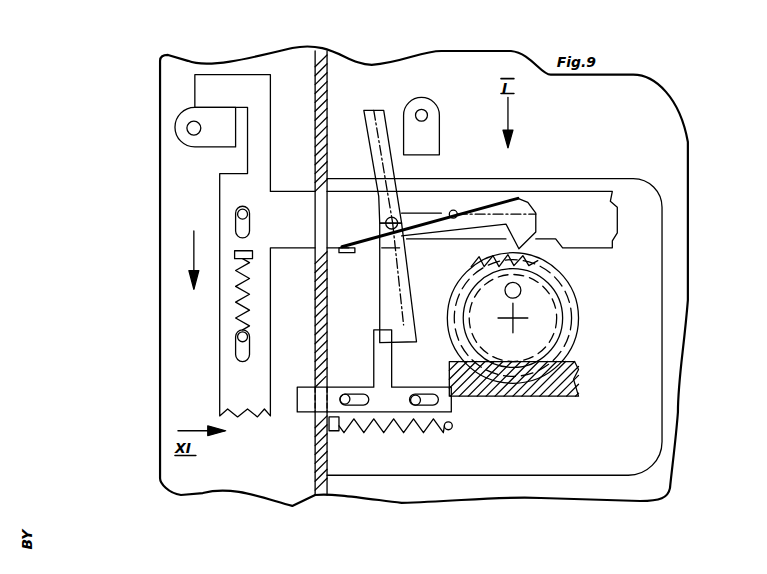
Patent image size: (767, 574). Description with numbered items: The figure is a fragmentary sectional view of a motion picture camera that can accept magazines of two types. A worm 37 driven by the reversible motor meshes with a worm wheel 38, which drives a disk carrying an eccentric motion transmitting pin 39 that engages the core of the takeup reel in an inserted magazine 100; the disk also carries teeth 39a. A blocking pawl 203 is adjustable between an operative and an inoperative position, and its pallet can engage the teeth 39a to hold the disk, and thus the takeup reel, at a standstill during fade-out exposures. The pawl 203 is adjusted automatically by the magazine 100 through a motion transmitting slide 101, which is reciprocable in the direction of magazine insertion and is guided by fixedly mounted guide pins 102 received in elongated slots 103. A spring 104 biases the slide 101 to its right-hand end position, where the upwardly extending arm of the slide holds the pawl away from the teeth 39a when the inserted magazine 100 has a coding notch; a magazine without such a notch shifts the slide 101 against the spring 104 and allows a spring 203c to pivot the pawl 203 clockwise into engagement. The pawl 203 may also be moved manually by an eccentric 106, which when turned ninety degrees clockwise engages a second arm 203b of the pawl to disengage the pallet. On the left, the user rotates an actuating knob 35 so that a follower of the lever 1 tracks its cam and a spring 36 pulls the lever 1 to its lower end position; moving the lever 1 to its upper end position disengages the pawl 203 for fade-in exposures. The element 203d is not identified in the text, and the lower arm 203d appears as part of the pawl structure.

The lever 1 is at (233, 385).
The actuating knob 35 is at (172, 143).
The spring 36 is at (237, 289).
The worm 37 is at (510, 400).
The worm wheel 38 is at (557, 337).
The eccentric motion transmitting pin 39 is at (583, 318).
The teeth 39a is at (518, 262).
The magazine 100 is at (640, 195).
The motion transmitting slide 101 is at (348, 403).
The guide pins 102 is at (343, 405).
The elongated slots 103 is at (360, 403).
The spring 104 is at (415, 433).
The eccentric 106 is at (430, 137).
The blocking pawl 203 is at (472, 213).
The second arm 203b is at (372, 140).
The spring 203c is at (410, 210).
The lower lever arm 203d is at (407, 303).